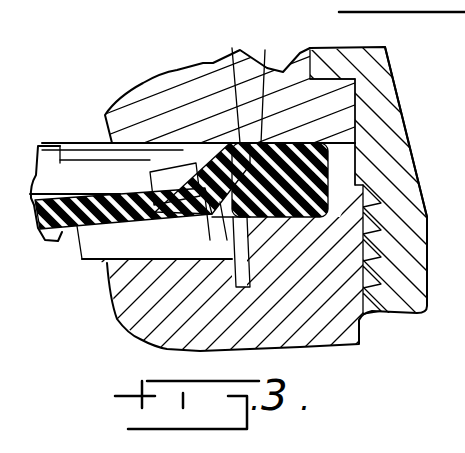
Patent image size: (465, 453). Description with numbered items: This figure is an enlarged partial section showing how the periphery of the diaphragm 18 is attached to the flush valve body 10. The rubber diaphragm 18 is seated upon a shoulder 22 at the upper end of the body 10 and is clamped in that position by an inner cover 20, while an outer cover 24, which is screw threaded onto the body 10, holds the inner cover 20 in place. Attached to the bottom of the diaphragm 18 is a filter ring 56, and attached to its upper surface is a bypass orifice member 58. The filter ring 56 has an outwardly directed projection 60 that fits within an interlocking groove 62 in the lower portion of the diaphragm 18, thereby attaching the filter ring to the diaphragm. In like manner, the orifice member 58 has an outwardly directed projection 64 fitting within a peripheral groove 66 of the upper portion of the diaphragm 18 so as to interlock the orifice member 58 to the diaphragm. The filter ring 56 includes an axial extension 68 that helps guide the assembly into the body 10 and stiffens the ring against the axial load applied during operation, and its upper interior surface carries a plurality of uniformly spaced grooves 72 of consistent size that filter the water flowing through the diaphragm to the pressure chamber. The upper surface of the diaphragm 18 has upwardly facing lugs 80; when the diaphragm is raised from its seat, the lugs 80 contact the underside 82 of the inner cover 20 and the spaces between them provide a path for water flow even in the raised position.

The body 10 is at (335, 338).
The diaphragm 18 is at (58, 228).
The inner cover 20 is at (190, 77).
The shoulder 22 is at (364, 188).
The outer cover 24 is at (384, 60).
The filter ring 56 is at (240, 275).
The bypass orifice member 58 is at (218, 85).
The outwardly directed projection 60 is at (372, 158).
The interlocking groove 62 is at (365, 135).
The outwardly directed projection 64 is at (372, 100).
The peripheral groove 66 is at (266, 84).
The axial extension 68 is at (222, 236).
The grooves 72 is at (217, 221).
The lugs 80 is at (143, 173).
The underside 82 is at (180, 146).